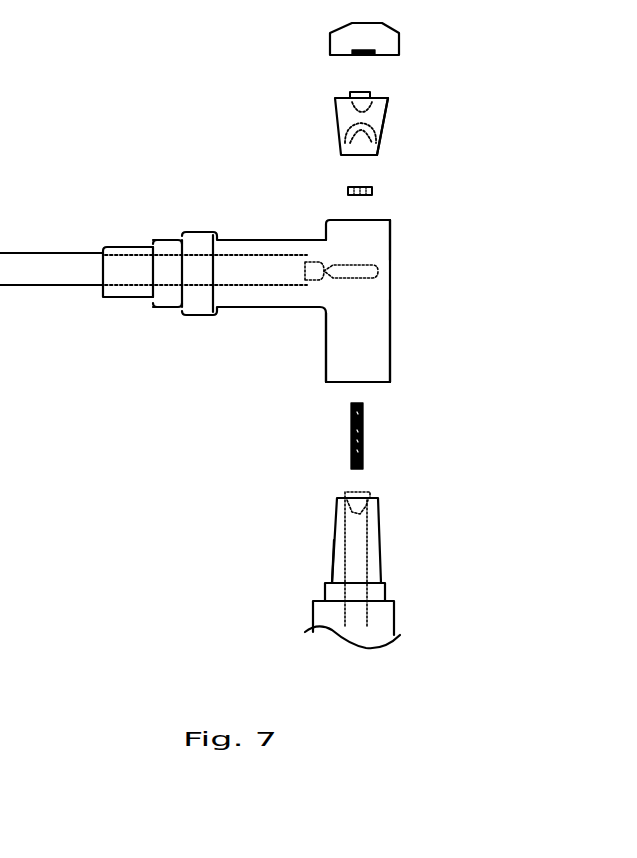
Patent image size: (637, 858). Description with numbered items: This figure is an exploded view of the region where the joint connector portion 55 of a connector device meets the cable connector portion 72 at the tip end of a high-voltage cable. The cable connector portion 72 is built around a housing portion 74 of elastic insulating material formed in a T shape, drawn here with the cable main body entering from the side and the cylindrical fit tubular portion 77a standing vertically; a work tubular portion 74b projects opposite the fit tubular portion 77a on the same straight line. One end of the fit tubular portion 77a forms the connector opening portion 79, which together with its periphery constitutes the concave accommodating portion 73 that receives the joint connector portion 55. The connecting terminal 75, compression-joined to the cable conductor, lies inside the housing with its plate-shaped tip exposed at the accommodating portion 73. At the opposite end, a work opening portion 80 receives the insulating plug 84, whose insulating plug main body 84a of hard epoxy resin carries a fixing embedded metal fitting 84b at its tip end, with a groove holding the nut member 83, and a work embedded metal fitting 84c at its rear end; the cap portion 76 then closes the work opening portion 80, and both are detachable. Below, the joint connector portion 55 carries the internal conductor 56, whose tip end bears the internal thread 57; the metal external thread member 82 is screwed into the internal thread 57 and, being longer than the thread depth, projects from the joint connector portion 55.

The joint connector portion 55 is at (336, 543).
The internal conductor 56 is at (333, 570).
The internal thread 57 is at (335, 503).
The cable connector portion 72 is at (392, 310).
The concave accommodating portion 73 is at (326, 371).
The housing portion 74 is at (232, 239).
The upper wall portion 74b is at (392, 228).
The connecting terminal 75 is at (380, 272).
The cap portion 76 is at (330, 42).
The fit tubular portion 77a is at (392, 343).
The connector opening portion 79 is at (381, 383).
The work opening portion 80 is at (390, 219).
The external thread member 82 is at (366, 437).
The nut member 83 is at (346, 192).
The insulating plug 84 is at (367, 120).
The insulating plug main body 84a is at (389, 125).
The fixing embedded metal fitting 84b is at (339, 144).
The work embedded metal fitting 84c is at (364, 92).